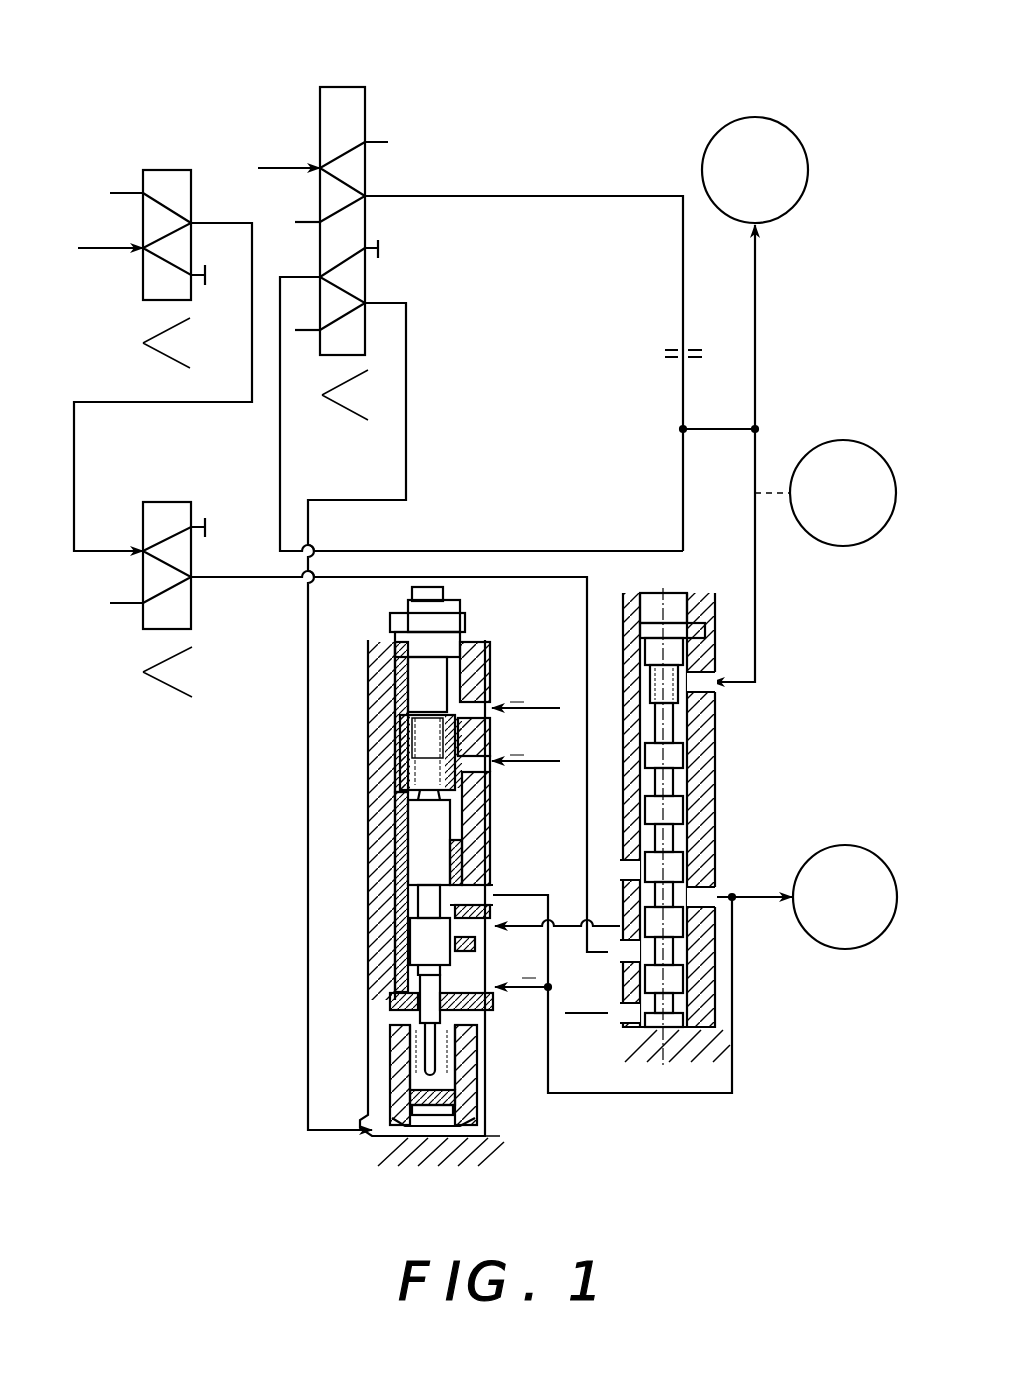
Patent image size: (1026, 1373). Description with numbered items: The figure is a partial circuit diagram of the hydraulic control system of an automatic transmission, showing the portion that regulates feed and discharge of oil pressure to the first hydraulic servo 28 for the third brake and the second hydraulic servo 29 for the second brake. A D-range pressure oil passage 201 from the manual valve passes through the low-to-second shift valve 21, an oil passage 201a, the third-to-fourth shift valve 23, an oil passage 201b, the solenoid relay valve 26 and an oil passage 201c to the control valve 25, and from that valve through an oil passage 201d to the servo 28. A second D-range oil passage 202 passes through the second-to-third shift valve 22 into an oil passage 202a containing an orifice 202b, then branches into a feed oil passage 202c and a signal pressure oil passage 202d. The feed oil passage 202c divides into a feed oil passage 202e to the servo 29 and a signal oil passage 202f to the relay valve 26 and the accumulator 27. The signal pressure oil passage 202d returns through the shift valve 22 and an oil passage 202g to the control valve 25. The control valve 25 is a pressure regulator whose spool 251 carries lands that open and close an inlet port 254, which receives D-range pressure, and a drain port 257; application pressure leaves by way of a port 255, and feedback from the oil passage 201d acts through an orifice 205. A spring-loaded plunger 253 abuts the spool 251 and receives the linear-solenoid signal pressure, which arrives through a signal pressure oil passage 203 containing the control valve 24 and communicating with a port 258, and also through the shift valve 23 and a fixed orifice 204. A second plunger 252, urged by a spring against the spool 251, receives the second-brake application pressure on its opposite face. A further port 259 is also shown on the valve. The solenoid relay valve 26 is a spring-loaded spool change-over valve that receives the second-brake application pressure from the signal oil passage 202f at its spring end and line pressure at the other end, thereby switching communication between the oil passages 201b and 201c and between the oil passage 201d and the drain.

The 1–2 shift valve 21 is at (165, 165).
The 2–3 shift valve 22 is at (364, 86).
The 3–4 shift valve 23 is at (175, 498).
The control valve 24 is at (505, 706).
The B-3 control valve 25 is at (478, 640).
The solenoid relay valve 26 is at (688, 590).
The B-2 accumulator 27 is at (840, 440).
The first hydraulic servo 28 is at (817, 850).
The second hydraulic servo 29 is at (720, 132).
The D-range pressure oil passage 201 is at (104, 252).
The oil passage 201a is at (125, 402).
The oil passage 201b is at (250, 580).
The oil passage 201c is at (568, 930).
The oil passage 201d is at (632, 1096).
The D-range oil passage 202 is at (280, 170).
The oil passage 202a is at (480, 196).
The orifice 202b is at (676, 349).
The feed oil passage 202c is at (720, 430).
The signal pressure oil passage 202d is at (540, 549).
The feed oil passage 202e is at (757, 355).
The signal oil passage 202f is at (757, 628).
The oil passage 202g is at (308, 860).
The signal pressure oil passage 203 is at (535, 742).
The fixed orifice 204 is at (490, 768).
The orifice 205 is at (492, 1006).
The spool 251 is at (420, 846).
The plunger 252 is at (460, 1088).
The plunger 253 is at (395, 722).
The inlet port 254 is at (482, 926).
The port 255 is at (484, 894).
The drain port 257 is at (470, 868).
The port 258 is at (490, 680).
The port 259 is at (470, 790).